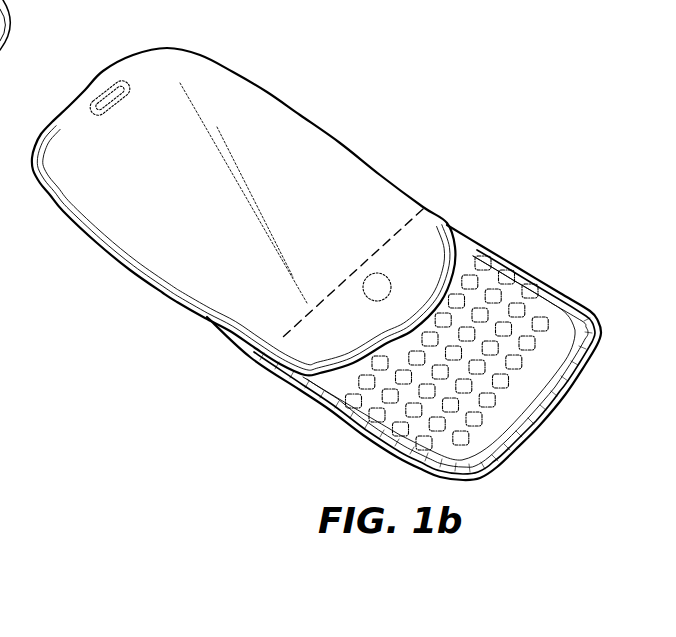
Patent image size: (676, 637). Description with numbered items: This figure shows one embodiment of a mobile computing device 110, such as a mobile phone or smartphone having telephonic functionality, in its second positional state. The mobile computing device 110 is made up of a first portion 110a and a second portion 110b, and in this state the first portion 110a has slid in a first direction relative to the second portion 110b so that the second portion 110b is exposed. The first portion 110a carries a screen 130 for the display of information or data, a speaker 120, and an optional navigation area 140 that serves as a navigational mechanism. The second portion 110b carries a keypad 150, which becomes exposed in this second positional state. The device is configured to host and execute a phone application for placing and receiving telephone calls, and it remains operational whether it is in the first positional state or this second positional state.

The mobile computing device 110 is at (289, 73).
The first portion 110a is at (307, 121).
The second portion 110b is at (281, 383).
The speaker 120 is at (107, 88).
The screen 130 is at (348, 167).
The navigation area 140 is at (353, 295).
The keypad 150 is at (543, 302).